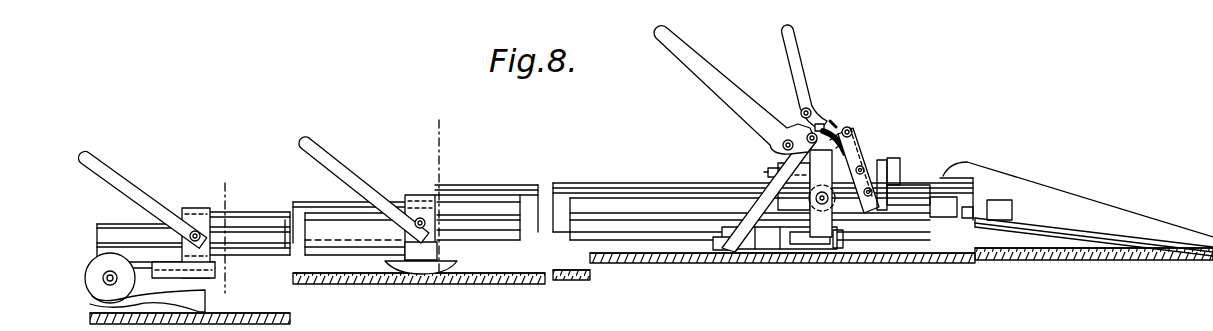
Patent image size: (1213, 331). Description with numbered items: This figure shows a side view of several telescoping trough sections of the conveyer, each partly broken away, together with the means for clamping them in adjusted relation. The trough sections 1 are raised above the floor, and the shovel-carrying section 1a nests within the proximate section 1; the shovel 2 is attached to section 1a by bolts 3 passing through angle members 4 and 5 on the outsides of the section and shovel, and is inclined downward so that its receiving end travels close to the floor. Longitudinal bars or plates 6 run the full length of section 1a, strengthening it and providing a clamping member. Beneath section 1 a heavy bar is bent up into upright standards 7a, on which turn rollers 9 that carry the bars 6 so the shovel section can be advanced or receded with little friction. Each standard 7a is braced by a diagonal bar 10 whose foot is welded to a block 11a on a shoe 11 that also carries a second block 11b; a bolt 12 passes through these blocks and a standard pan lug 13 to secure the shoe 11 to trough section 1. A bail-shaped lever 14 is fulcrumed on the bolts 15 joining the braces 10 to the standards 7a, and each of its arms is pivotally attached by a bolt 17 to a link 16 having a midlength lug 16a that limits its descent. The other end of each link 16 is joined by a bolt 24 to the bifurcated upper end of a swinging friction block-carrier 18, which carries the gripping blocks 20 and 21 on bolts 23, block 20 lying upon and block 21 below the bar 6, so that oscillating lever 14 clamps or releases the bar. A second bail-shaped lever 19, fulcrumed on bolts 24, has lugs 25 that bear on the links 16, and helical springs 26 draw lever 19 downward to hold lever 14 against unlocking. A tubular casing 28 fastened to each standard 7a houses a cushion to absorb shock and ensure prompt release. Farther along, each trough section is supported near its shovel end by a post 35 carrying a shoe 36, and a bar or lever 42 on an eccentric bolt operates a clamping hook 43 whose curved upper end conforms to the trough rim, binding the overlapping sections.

The trough section 1 is at (665, 228).
The shovel-carrying trough section 1a is at (215, 212).
The shovel 2 is at (1090, 209).
The bolts 3 is at (962, 212).
The angle member 4 is at (948, 205).
The angle member 5 is at (1000, 208).
The longitudinal bars or plates 6 is at (935, 180).
The upright standards 7a is at (827, 237).
The wheels or rollers 9 is at (440, 122).
The diagonal bar 10 is at (763, 203).
The shoe 11 is at (781, 249).
The block 11a is at (718, 250).
The second block 11b is at (812, 249).
The bolt 12 is at (226, 184).
The standard pan lug 13 is at (770, 240).
The two-armed or bail-shaped lever 14 is at (717, 90).
The bolts 15 is at (809, 137).
The link 16 is at (800, 126).
The lug 16a is at (820, 123).
The bolt 17 is at (783, 149).
The swinging friction block-carrier 18 is at (867, 148).
The second bail-shaped lever 19 is at (792, 64).
The friction block 20 is at (888, 175).
The friction block 21 is at (886, 205).
The bolt 23 is at (873, 172).
The bolt 24 is at (850, 127).
The lug or projection 25 is at (831, 118).
The helical spring 26 is at (863, 136).
The horizontal tubular shell or casing 28 is at (834, 212).
The post 35 is at (212, 263).
The shoe 36 is at (425, 266).
The bar or lever 42 is at (141, 194).
The clamping jaw or hook 43 is at (190, 208).